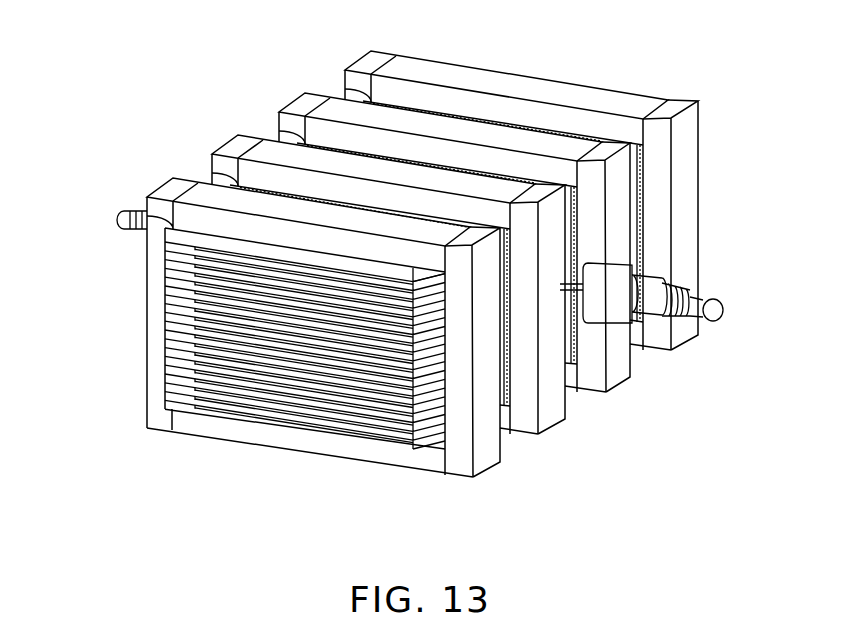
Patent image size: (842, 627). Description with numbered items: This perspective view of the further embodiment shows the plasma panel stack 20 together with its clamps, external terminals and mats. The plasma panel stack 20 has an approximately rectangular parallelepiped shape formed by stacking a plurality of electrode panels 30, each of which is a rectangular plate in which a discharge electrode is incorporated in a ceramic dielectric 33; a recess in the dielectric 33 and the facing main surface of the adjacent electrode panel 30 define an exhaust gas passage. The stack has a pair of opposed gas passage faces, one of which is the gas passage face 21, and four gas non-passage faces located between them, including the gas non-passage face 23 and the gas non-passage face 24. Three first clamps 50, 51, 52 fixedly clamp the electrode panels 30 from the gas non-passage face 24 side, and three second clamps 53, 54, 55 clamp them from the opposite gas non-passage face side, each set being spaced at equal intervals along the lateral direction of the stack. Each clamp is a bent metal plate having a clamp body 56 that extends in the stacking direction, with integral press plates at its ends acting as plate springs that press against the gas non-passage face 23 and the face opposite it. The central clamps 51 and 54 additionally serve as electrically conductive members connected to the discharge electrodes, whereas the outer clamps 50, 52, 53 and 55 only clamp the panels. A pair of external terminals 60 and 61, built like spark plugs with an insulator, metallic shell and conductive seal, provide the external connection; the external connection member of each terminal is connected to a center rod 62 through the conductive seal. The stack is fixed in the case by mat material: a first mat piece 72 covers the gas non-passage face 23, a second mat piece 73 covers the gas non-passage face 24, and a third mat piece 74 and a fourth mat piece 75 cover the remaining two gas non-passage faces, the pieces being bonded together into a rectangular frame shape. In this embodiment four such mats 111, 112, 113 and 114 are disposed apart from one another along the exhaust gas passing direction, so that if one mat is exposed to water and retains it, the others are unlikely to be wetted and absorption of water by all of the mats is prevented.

The plasma panel stack 20 is at (288, 366).
The gas passage face 21 is at (287, 423).
The gas non-passage face 23 is at (350, 257).
The gas non-passage face 24 is at (442, 438).
The electrode panel 30 is at (172, 393).
The dielectric 33 is at (428, 428).
The first clamp 50 is at (357, 281).
The first clamp 51 is at (423, 237).
The first clamp 52 is at (527, 196).
The second clamp 53 is at (230, 183).
The second clamp 54 is at (292, 140).
The second clamp 55 is at (358, 102).
The clamp body 56 is at (652, 180).
The external terminal 60 is at (727, 312).
The external terminal 61 is at (120, 219).
The center rod 62 is at (588, 262).
The first mat piece 72 is at (513, 87).
The second mat piece 73 is at (690, 130).
The third mat piece 74 is at (328, 452).
The fourth mat piece 75 is at (375, 72).
The mat 111 is at (295, 259).
The mat 112 is at (228, 147).
The mat 113 is at (299, 107).
The mat 114 is at (650, 96).